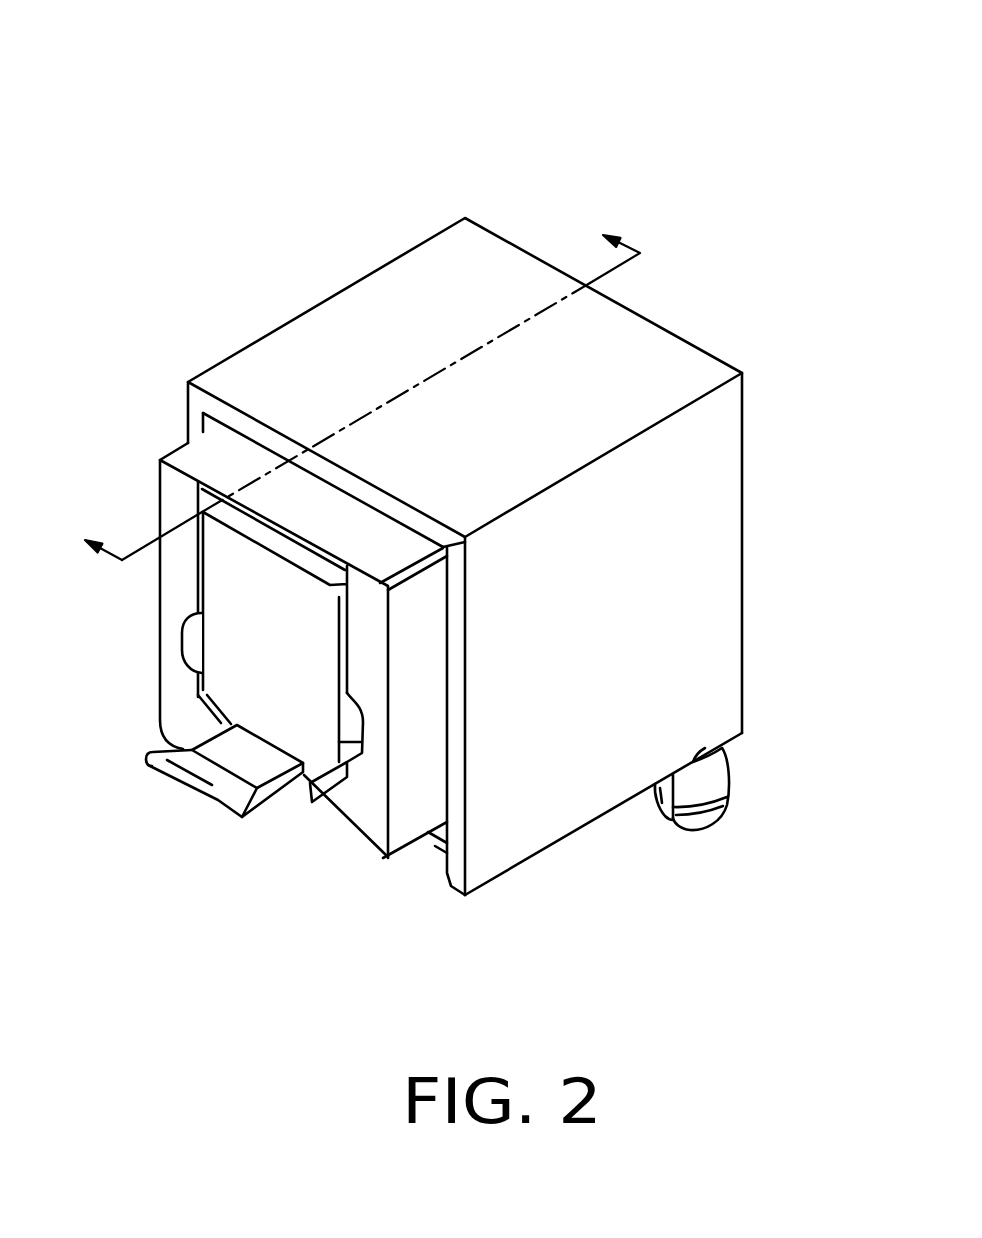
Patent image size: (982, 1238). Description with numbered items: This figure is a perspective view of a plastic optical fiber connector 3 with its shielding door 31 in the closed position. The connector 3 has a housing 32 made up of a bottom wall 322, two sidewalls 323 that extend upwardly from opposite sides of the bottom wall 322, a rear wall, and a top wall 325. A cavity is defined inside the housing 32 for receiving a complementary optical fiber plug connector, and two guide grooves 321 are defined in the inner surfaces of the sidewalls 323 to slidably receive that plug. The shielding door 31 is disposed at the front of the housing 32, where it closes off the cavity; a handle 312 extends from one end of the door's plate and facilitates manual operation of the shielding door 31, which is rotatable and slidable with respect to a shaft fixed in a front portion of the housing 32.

The plastic optical fiber connector 3 is at (619, 46).
The housing 32 is at (683, 302).
The top wall 325 is at (310, 368).
The sidewalls 323 is at (193, 410).
The bottom wall 322 is at (437, 845).
The shielding door 31 is at (258, 668).
The guide grooves 321 is at (190, 633).
The handle 312 is at (221, 768).